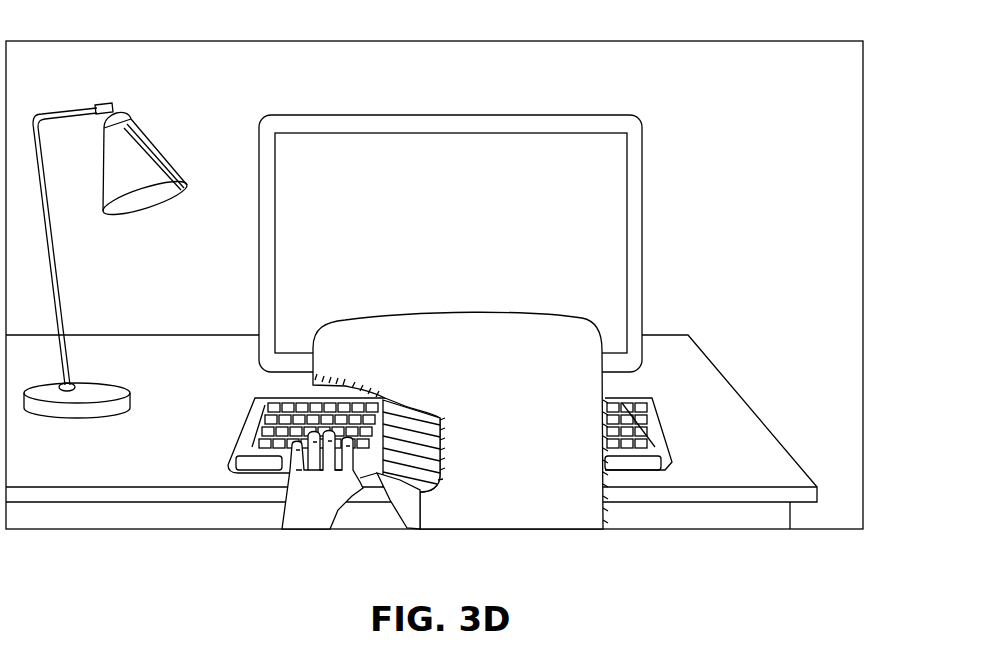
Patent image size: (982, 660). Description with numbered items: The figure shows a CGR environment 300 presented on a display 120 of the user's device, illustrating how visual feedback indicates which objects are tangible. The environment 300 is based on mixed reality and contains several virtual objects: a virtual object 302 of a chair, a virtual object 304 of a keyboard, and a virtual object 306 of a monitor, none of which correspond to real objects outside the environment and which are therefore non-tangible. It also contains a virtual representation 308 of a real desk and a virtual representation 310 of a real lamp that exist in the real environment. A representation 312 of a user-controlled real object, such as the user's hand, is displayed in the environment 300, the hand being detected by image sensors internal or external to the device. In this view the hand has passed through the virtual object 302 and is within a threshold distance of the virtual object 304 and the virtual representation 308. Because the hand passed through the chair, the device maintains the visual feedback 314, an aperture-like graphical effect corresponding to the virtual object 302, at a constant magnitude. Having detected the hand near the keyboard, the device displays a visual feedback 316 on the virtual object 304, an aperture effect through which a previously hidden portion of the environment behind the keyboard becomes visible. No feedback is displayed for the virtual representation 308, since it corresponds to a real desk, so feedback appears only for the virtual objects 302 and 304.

The display 120 is at (641, 41).
The CGR environment 300 is at (838, 297).
The virtual object 302 is at (452, 326).
The virtual object 304 is at (622, 425).
The virtual object 306 is at (597, 215).
The virtual representation 308 is at (755, 432).
The virtual representation 310 is at (152, 178).
The representation 312 is at (318, 498).
The visual feedback 314 is at (432, 425).
The visual feedback 316 is at (400, 520).